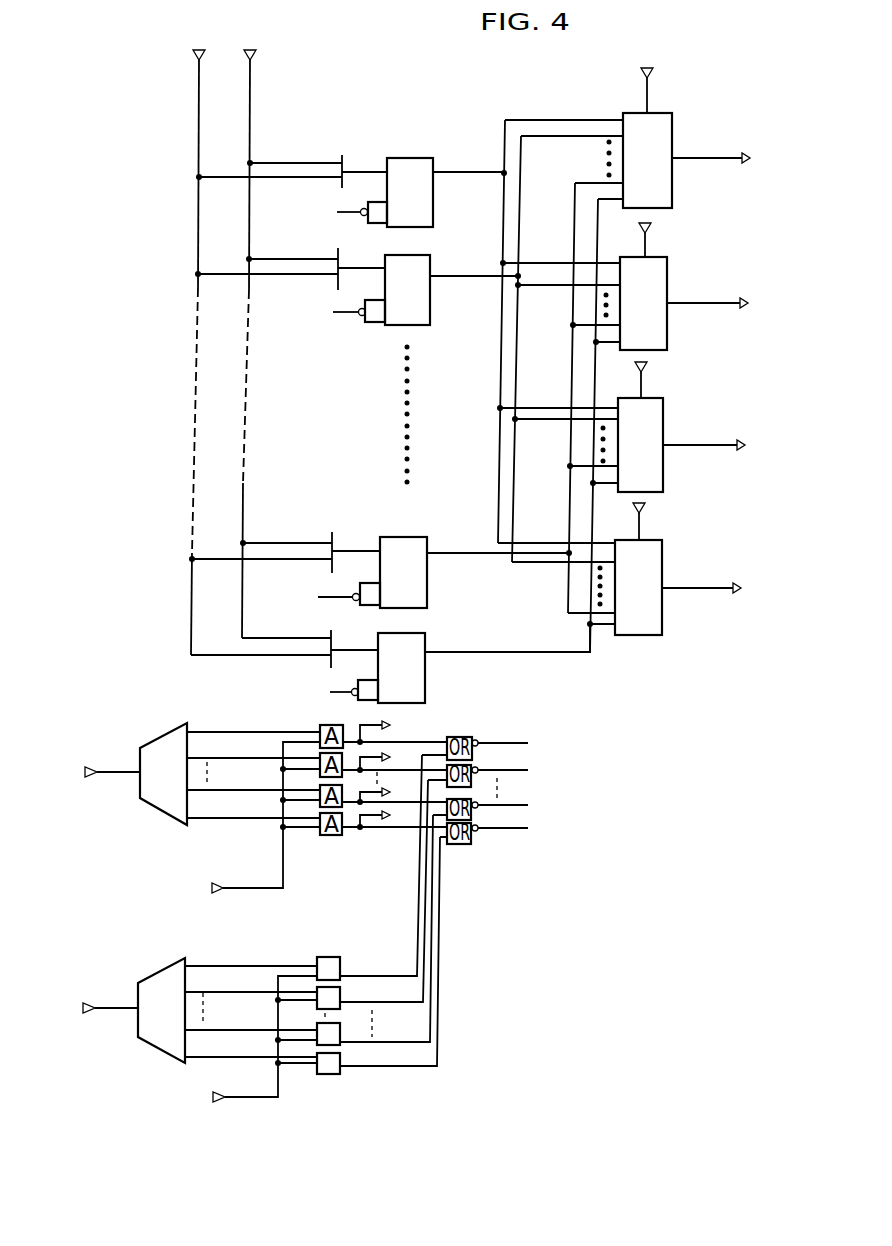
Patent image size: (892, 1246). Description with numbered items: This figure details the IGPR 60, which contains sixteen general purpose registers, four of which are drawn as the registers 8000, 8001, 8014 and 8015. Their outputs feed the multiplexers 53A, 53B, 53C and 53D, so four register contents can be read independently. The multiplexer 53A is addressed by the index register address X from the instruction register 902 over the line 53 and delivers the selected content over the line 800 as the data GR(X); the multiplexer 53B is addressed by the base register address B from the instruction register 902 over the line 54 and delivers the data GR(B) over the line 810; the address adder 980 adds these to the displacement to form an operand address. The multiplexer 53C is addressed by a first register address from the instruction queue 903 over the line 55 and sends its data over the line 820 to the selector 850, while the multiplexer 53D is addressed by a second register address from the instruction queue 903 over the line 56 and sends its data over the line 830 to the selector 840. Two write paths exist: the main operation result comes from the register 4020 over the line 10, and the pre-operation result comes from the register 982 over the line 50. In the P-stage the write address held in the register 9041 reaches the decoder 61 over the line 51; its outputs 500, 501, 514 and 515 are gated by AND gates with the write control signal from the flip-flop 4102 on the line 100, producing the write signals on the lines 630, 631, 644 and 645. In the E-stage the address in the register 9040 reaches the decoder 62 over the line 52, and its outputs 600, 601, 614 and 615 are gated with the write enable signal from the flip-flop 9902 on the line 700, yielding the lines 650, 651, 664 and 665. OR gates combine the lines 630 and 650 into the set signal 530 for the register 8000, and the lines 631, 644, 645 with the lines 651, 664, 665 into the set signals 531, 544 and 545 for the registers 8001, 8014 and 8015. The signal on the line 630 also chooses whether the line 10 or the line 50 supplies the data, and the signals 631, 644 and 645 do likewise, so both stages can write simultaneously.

The register 982 is at (194, 43).
The register 4020 is at (256, 43).
The line 50 is at (199, 120).
The line 10 is at (250, 120).
The IGPR 60 is at (178, 345).
The line 630 is at (317, 158).
The line 631 is at (315, 258).
The line 644 is at (309, 537).
The line 645 is at (308, 632).
The line 530 is at (503, 743).
The line 531 is at (513, 770).
The line 544 is at (518, 800).
The line 545 is at (505, 829).
The general purpose register 8000 is at (433, 220).
The general purpose register 8001 is at (431, 322).
The general purpose register 8014 is at (428, 606).
The general purpose register 8015 is at (425, 700).
The instruction register 902 is at (658, 138).
The instruction queue register 903 is at (659, 436).
The line 53 is at (645, 97).
The line 54 is at (643, 250).
The line 55 is at (640, 385).
The line 56 is at (639, 528).
The multiplexer 53A is at (672, 200).
The multiplexer 53B is at (667, 342).
The multiplexer 53C is at (663, 485).
The multiplexer 53D is at (662, 630).
The line 800 is at (682, 158).
The line 810 is at (688, 303).
The line 820 is at (684, 445).
The line 830 is at (683, 588).
The address adder 980 is at (767, 232).
The selector 850 is at (763, 447).
The selector 840 is at (759, 592).
The register 9041 is at (85, 772).
The line 51 is at (112, 772).
The decoder 61 is at (168, 815).
The decoder output line 500 is at (257, 732).
The decoder output line 501 is at (258, 757).
The decoder output line 514 is at (257, 789).
The decoder output line 515 is at (256, 816).
The flip-flop 4102 is at (190, 890).
The line 100 is at (243, 888).
The register 9040 is at (83, 1008).
The line 52 is at (128, 1009).
The decoder 62 is at (163, 1049).
The decoder output line 600 is at (218, 950).
The decoder output line 601 is at (251, 990).
The decoder output line 614 is at (253, 1028).
The decoder output line 615 is at (253, 1055).
The flip-flop 9902 is at (191, 1099).
The line 700 is at (272, 1097).
The line 650 is at (362, 963).
The line 651 is at (360, 991).
The line 664 is at (397, 1042).
The line 665 is at (403, 1066).